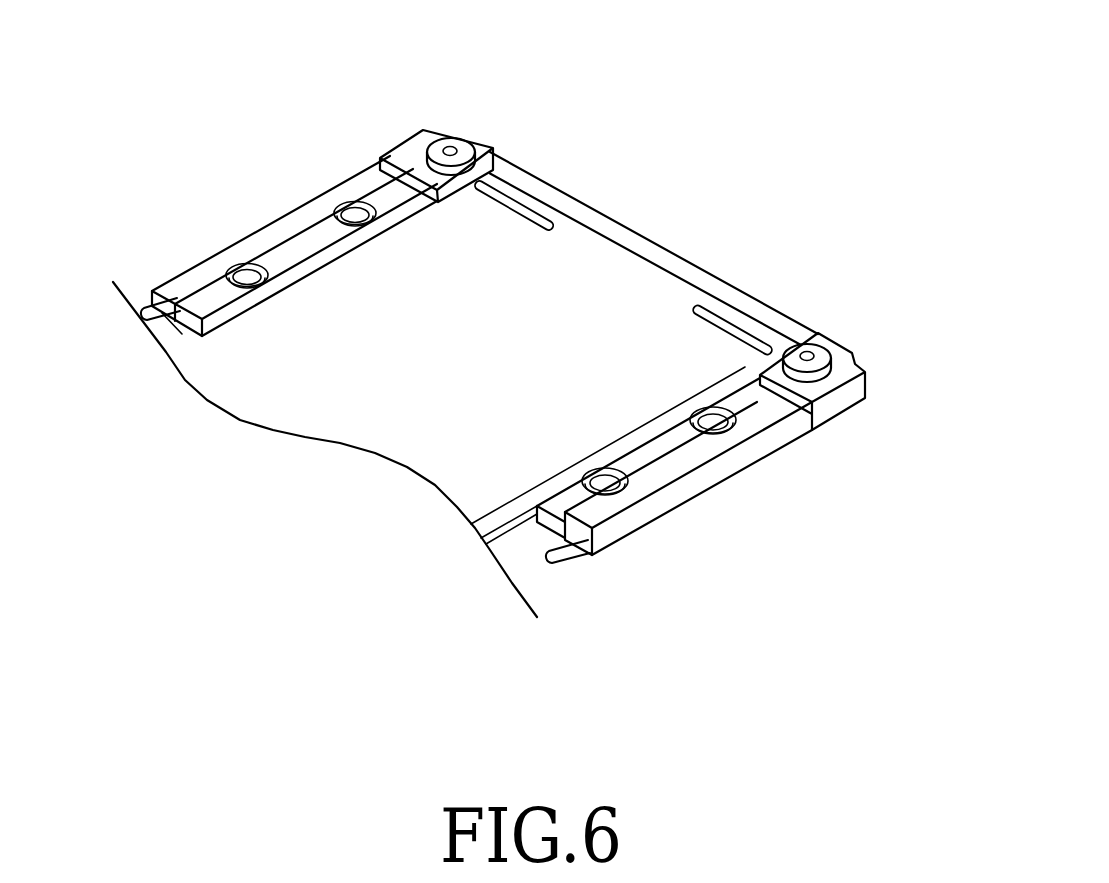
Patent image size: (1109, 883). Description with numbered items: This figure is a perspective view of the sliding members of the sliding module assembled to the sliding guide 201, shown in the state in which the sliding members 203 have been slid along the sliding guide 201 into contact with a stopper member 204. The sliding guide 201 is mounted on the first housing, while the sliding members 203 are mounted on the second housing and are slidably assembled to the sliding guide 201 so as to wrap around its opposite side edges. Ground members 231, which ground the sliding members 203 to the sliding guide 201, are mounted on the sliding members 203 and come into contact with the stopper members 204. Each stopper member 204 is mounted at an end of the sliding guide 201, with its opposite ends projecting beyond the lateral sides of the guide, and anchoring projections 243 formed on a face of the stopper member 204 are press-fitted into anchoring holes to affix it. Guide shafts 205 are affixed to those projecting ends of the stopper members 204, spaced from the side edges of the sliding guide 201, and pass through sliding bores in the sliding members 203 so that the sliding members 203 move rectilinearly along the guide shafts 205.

The sliding guide 201 is at (327, 425).
The sliding member 203 is at (261, 217).
The stopper member 204 is at (643, 235).
The guide shaft 205 is at (150, 310).
The ground member 231 is at (301, 240).
The anchoring projection 243 is at (508, 200).